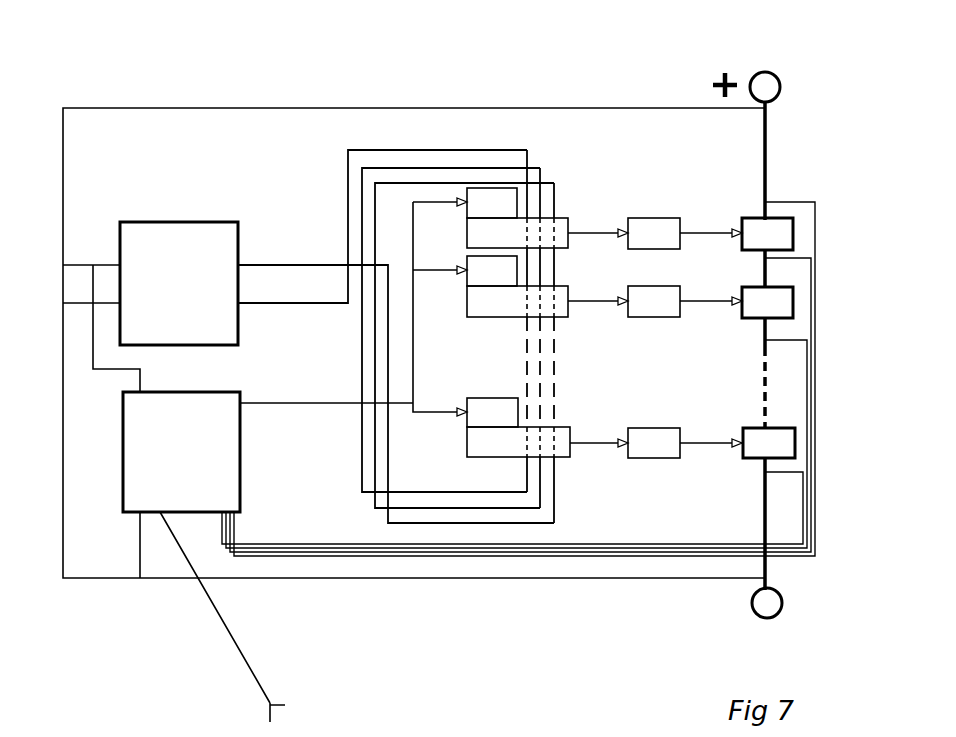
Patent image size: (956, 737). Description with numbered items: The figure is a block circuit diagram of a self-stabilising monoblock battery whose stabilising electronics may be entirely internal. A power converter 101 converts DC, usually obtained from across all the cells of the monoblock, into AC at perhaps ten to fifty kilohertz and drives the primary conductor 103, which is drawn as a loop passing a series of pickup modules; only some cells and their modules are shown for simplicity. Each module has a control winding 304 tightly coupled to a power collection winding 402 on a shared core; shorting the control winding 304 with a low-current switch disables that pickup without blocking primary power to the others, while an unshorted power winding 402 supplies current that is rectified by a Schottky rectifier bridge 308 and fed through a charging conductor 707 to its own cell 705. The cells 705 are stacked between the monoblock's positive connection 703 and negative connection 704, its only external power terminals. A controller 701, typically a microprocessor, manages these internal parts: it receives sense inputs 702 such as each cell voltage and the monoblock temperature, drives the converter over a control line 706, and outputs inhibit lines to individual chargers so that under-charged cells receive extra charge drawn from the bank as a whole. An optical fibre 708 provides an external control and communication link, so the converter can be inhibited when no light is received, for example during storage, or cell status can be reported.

The power converter 101 is at (199, 222).
The primary conductor 103 is at (347, 182).
The control winding 304 is at (494, 380).
The power collection winding 402 is at (468, 457).
The Schottky rectifier bridge 308 is at (630, 458).
The controller 701 is at (240, 512).
The sense conductors 702 is at (405, 556).
The positive connection 703 is at (768, 72).
The negative connection 704 is at (745, 601).
The cell 705 is at (746, 460).
The control line 706 is at (296, 371).
The charging conductors 707 is at (710, 443).
The optical fibre 708 is at (298, 660).